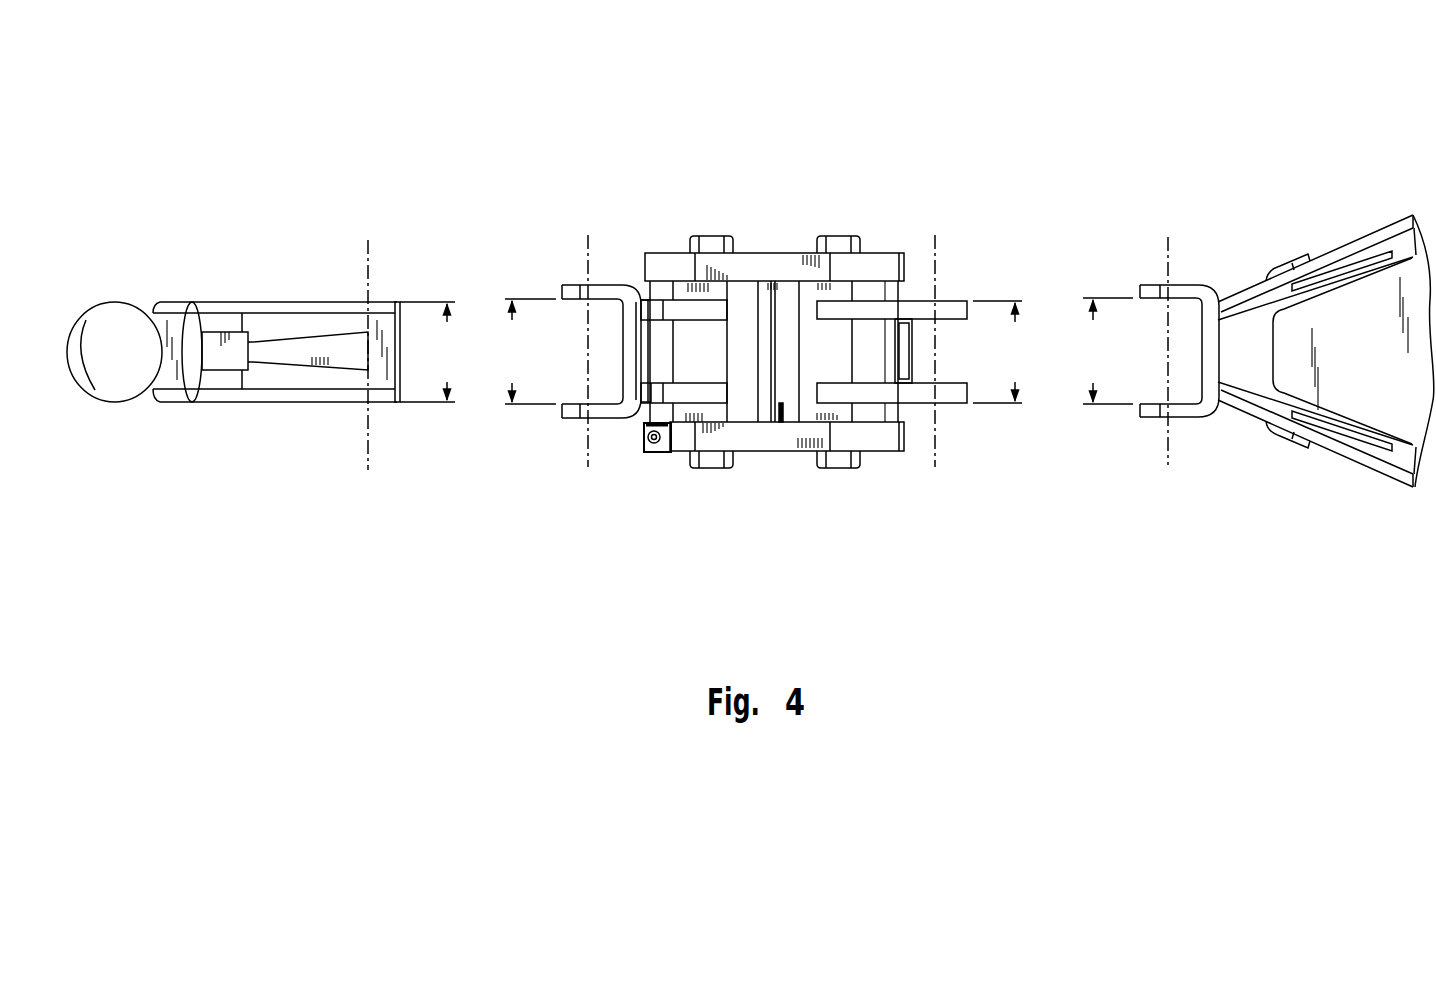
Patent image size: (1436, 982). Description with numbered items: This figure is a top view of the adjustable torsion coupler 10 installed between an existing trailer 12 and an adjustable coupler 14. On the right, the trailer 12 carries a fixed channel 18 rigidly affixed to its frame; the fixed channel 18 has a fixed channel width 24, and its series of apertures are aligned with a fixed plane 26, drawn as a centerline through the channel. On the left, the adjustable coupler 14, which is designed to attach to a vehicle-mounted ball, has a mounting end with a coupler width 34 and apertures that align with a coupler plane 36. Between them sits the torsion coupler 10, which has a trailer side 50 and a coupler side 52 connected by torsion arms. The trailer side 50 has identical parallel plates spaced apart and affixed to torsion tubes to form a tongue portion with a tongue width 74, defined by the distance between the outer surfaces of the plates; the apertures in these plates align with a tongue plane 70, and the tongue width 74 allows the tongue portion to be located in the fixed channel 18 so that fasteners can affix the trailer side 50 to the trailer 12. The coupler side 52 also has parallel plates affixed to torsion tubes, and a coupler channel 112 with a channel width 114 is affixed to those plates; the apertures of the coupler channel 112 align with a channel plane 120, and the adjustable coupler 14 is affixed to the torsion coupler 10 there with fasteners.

The adjustable torsion coupler 10 is at (779, 196).
The trailer 12 is at (1323, 215).
The adjustable coupler 14 is at (204, 265).
The fixed channel 18 is at (1187, 290).
The fixed channel width 24 is at (1106, 351).
The fixed plane 26 is at (1168, 436).
The coupler width 34 is at (429, 352).
The coupler plane 36 is at (368, 436).
The trailer side 50 is at (926, 493).
The coupler side 52 is at (612, 493).
The tongue plane 70 is at (935, 250).
The tongue width 74 is at (1000, 352).
The coupler channel 112 is at (613, 290).
The channel width 114 is at (524, 351).
The channel plane 120 is at (587, 251).